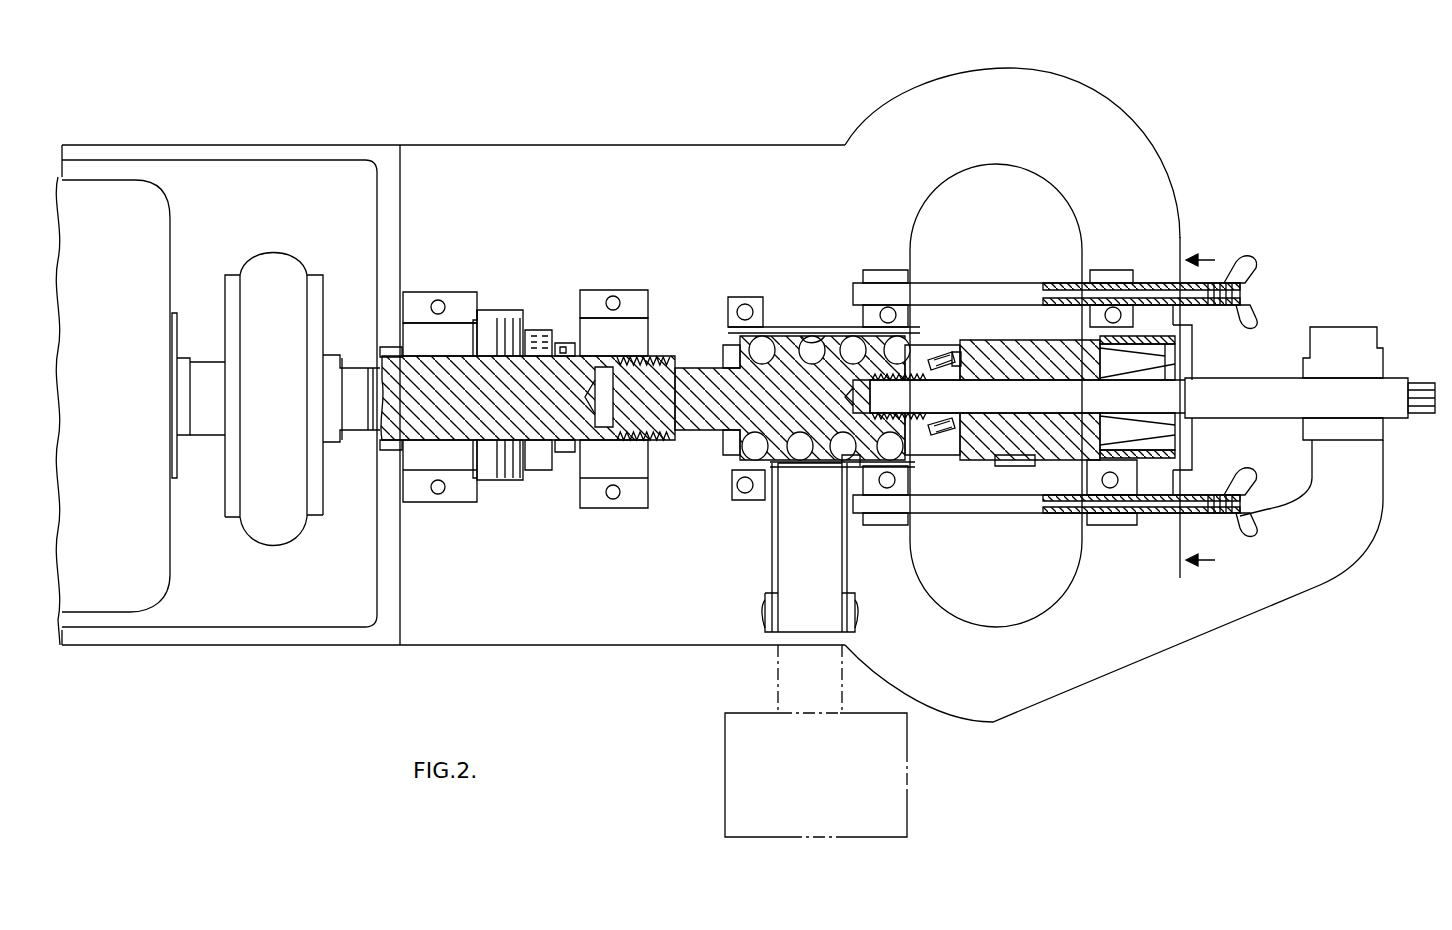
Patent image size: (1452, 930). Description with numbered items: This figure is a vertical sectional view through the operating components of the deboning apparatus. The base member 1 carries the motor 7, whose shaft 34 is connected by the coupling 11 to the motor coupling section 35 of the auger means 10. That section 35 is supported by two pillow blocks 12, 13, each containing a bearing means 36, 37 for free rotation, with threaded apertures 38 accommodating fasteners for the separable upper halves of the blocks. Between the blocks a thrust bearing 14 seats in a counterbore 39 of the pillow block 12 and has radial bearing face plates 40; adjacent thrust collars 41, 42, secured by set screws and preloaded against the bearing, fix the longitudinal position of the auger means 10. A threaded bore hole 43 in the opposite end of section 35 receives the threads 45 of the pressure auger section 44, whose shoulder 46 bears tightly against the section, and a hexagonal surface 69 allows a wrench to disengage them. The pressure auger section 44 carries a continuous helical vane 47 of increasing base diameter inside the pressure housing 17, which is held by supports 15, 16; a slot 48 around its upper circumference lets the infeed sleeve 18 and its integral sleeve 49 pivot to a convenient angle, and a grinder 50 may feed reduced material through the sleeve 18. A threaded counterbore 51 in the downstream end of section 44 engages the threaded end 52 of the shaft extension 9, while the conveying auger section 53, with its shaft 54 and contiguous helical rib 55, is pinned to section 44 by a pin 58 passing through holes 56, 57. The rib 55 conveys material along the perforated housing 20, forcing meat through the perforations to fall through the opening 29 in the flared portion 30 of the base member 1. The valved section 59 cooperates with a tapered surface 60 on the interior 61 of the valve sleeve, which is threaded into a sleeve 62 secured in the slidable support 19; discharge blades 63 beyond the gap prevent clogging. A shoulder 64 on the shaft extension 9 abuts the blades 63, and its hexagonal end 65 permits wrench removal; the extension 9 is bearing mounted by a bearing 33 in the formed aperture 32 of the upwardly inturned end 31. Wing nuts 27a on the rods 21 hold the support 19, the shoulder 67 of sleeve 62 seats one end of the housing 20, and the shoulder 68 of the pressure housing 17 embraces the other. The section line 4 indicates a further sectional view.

The base member 1 is at (660, 166).
The section line 4 is at (1209, 408).
The motor 7 is at (120, 188).
The shaft extension 9 is at (1238, 381).
The auger means 10 is at (691, 326).
The coupling 11 is at (268, 252).
The pillow block 12 is at (413, 304).
The pillow block 13 is at (584, 291).
The thrust bearing 14 is at (527, 330).
The support 15 is at (756, 284).
The support 16 is at (878, 280).
The pressure housing 17 is at (800, 345).
The infeed sleeve 18 is at (772, 538).
The slidable support 19 is at (1122, 280).
The perforated housing 20 is at (1015, 462).
The rods 21 is at (1035, 301).
The wing nuts 27a is at (1248, 270).
The opening 29 is at (1010, 176).
The flared portion 30 is at (1088, 108).
The upwardly inturned end 31 is at (1360, 486).
The formed aperture 32 is at (1372, 352).
The bearing 33 is at (1337, 362).
The shaft 34 is at (202, 378).
The motor coupling section 35 is at (386, 378).
The bearing means 36 is at (450, 338).
The bearing means 37 is at (640, 343).
The threaded apertures 38 is at (445, 302).
The counterbore 39 is at (500, 316).
The radial bearing face plates 40 is at (506, 486).
The thrust collar 41 is at (530, 332).
The thrust collar 42 is at (558, 345).
The bore hole 43 is at (612, 372).
The pressure auger section 44 is at (721, 452).
The threads 45 is at (655, 442).
The shoulder 46 is at (686, 367).
The helical vane 47 is at (815, 346).
The slot 48 is at (775, 463).
The sleeve 49 is at (768, 341).
The grinder 50 is at (726, 812).
The counterbore 51 is at (836, 471).
The threaded end 52 is at (905, 386).
The conveying auger section 53 is at (985, 472).
The shaft 54 is at (960, 348).
The helical rib 55 is at (998, 336).
The hole 56 is at (938, 351).
The hole 57 is at (953, 351).
The pin 58 is at (942, 345).
The valved section 59 is at (1092, 457).
The tapered surface 60 is at (1075, 343).
The interior of valve sleeve 61 is at (1183, 352).
The threaded sleeve 62 is at (1185, 319).
The discharge blades 63 is at (1183, 366).
The shoulder 64 is at (1168, 419).
The hexagonal end 65 is at (1422, 385).
The shoulder 67 is at (1078, 473).
The shoulder 68 is at (920, 464).
The hexagonal surface 69 is at (700, 433).